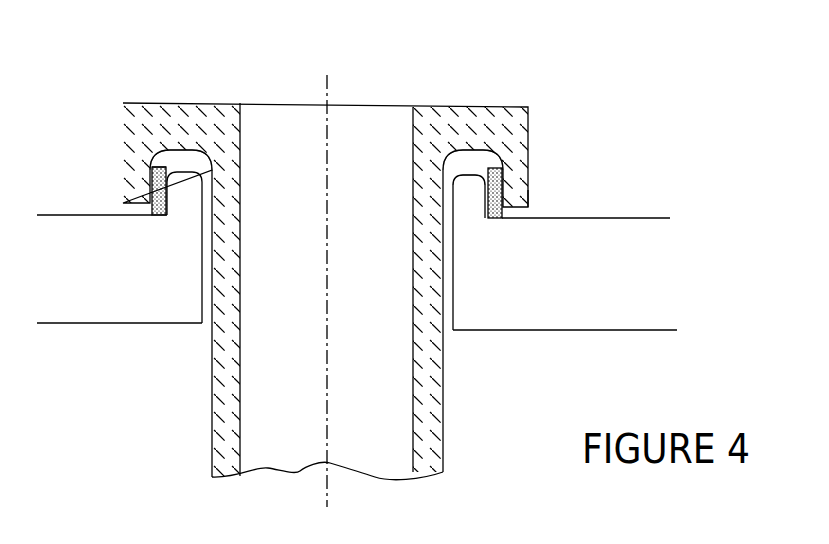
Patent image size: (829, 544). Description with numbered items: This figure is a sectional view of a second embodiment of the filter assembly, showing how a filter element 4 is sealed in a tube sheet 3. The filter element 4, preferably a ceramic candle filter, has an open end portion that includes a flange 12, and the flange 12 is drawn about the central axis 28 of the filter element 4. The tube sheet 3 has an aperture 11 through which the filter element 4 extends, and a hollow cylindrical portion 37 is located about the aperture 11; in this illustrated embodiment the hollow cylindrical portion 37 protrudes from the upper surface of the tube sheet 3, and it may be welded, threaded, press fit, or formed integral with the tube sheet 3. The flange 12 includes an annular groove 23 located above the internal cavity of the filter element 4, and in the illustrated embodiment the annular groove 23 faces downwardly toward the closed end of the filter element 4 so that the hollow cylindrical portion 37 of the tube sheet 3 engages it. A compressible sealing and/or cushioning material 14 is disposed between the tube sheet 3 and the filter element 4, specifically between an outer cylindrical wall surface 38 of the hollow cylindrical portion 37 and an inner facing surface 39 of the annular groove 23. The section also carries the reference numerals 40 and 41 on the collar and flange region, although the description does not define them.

The tube sheet 3 is at (65, 292).
The filter element 4 is at (447, 440).
The aperture 11 is at (450, 333).
The flange 12 is at (503, 107).
The compressible sealing and/or cushioning material 14 is at (152, 193).
The annular groove 23 is at (495, 152).
The axis 28 is at (327, 490).
The hollow cylindrical portion 37 is at (193, 187).
The outer cylindrical wall surface 38 is at (172, 210).
The inner facing surface 39 is at (152, 173).
The collar inner surface 40 is at (467, 185).
The flange outer edge 41 is at (528, 198).